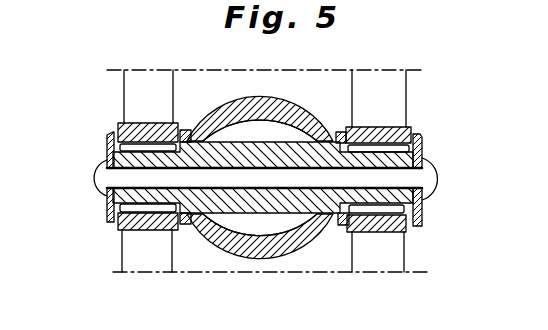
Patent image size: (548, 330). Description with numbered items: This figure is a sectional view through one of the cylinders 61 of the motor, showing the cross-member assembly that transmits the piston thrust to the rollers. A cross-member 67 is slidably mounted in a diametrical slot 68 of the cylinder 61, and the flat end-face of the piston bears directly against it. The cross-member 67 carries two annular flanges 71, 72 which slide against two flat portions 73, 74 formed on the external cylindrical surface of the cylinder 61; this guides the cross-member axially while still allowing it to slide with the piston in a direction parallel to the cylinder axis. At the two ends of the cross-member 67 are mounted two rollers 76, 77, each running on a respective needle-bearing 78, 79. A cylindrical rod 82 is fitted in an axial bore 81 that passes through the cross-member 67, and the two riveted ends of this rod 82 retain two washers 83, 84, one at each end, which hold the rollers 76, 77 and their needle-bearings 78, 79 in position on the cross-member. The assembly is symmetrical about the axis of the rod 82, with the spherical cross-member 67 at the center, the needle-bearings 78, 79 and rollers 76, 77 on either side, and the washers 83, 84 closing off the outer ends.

The cylinder 61 is at (265, 252).
The cross-member 67 is at (272, 141).
The diametrical slot 68 is at (213, 216).
The annular flange 71 is at (186, 224).
The annular flange 72 is at (343, 226).
The flat portion 73 is at (191, 130).
The flat portion 74 is at (340, 132).
The roller 76 is at (143, 123).
The roller 77 is at (390, 232).
The needle-bearing 78 is at (121, 228).
The needle-bearing 79 is at (406, 212).
The axial bore 81 is at (110, 188).
The cylindrical rod 82 is at (107, 172).
The washer 83 is at (110, 134).
The washer 84 is at (422, 146).